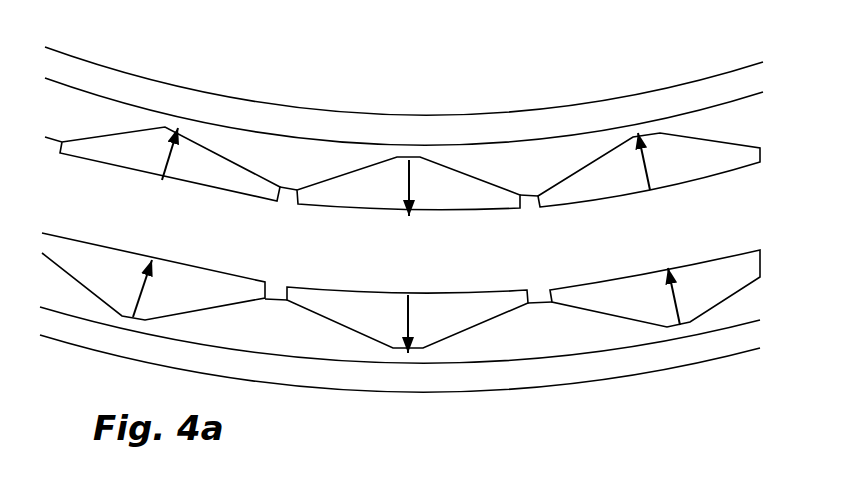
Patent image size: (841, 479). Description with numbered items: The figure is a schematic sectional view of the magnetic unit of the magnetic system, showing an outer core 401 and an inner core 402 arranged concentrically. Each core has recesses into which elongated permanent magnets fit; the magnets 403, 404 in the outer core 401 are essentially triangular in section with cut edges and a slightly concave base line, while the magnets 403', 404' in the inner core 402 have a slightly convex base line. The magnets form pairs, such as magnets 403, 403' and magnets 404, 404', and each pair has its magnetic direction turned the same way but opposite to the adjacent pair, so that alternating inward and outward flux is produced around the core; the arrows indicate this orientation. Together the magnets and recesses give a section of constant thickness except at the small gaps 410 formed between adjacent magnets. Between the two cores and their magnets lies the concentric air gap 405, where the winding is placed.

The outer core 401 is at (282, 328).
The inner core 402 is at (295, 163).
The permanent magnet 403 is at (419, 375).
The permanent magnet 403' is at (417, 128).
The permanent magnet 404 is at (655, 349).
The permanent magnet 404' is at (649, 114).
The concentric air gap 405 is at (745, 237).
The gap 410 is at (278, 298).